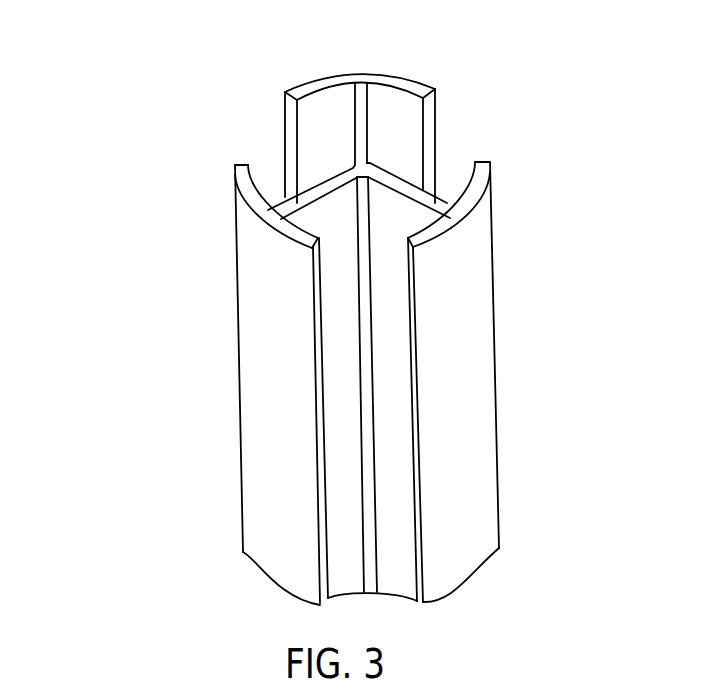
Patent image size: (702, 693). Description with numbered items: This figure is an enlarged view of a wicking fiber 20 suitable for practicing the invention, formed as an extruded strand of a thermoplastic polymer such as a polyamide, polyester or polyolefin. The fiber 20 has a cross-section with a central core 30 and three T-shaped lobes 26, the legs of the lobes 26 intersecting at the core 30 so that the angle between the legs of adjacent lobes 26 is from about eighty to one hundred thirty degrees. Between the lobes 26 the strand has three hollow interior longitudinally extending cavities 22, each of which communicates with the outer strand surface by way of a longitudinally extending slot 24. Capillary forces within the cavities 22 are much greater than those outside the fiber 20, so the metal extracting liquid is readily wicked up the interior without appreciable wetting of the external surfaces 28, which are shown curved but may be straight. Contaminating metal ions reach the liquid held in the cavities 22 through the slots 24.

The wicking fiber 20 is at (158, 417).
The hollow interior longitudinally extending cavity 22 is at (337, 115).
The longitudinally extending slot 24 is at (272, 152).
The T-shaped lobe 26 is at (267, 180).
The external surface 28 is at (263, 495).
The central core 30 is at (363, 163).